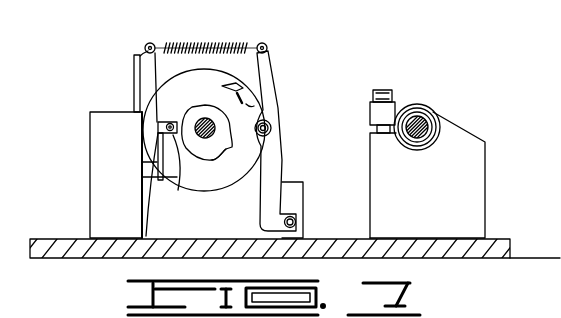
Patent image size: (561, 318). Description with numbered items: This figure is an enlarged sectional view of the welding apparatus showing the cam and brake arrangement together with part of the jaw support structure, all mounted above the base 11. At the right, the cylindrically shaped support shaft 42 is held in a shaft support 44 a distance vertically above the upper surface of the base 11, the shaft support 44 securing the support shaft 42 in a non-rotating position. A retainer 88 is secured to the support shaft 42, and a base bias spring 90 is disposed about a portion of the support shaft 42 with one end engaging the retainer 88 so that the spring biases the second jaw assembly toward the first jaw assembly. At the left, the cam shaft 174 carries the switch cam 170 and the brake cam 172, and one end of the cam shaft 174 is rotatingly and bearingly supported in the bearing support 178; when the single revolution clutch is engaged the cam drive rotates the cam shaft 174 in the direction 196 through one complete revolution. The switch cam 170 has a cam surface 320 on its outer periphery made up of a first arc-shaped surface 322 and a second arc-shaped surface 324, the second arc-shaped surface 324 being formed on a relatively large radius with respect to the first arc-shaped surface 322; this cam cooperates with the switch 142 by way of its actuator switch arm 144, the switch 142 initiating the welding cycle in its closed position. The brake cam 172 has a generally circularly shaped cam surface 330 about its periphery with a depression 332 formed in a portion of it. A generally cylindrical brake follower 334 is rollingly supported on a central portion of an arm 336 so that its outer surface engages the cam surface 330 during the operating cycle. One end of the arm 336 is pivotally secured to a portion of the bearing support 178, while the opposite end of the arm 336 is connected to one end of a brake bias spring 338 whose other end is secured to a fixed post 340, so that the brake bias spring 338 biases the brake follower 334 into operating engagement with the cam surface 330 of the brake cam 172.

The base 11 is at (493, 243).
The support shaft 42 is at (421, 116).
The shaft support 44 is at (467, 157).
The retainer 88 is at (410, 107).
The base bias spring 90 is at (428, 121).
The switch 142 is at (100, 157).
The actuator switch arm 144 is at (170, 184).
The switch cam 170 is at (143, 122).
The brake cam 172 is at (215, 75).
The cam shaft 174 is at (202, 116).
The bearing support 178 is at (292, 200).
The direction 196 is at (243, 88).
The cam surface 320 is at (250, 106).
The first arc-shaped surface 322 is at (186, 117).
The second arc-shaped surface 324 is at (206, 162).
The cam surface 330 is at (268, 50).
The depression 332 is at (271, 125).
The brake follower 334 is at (271, 131).
The arm 336 is at (265, 215).
The brake bias spring 338 is at (200, 43).
The fixed post 340 is at (135, 57).